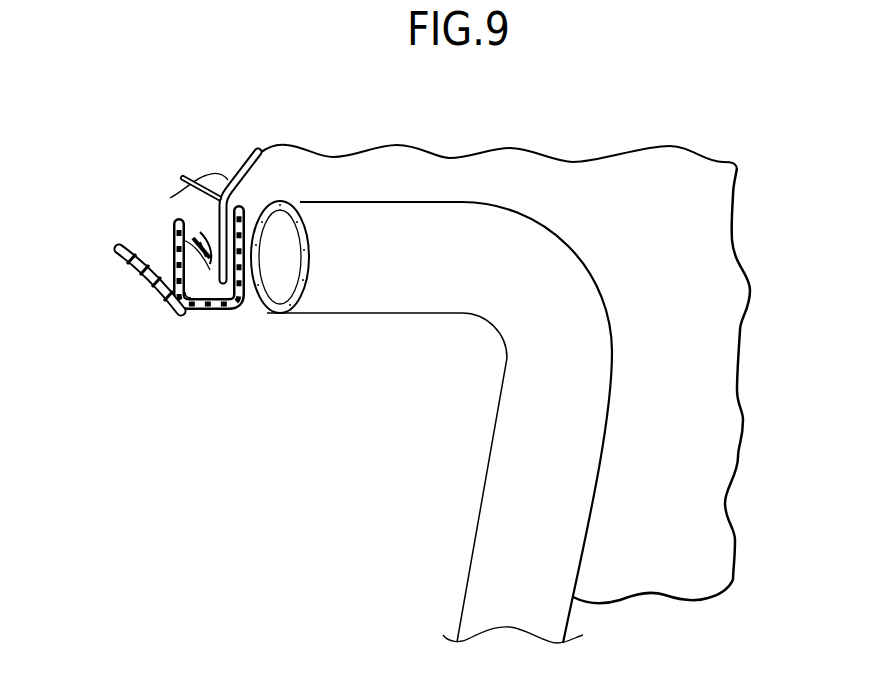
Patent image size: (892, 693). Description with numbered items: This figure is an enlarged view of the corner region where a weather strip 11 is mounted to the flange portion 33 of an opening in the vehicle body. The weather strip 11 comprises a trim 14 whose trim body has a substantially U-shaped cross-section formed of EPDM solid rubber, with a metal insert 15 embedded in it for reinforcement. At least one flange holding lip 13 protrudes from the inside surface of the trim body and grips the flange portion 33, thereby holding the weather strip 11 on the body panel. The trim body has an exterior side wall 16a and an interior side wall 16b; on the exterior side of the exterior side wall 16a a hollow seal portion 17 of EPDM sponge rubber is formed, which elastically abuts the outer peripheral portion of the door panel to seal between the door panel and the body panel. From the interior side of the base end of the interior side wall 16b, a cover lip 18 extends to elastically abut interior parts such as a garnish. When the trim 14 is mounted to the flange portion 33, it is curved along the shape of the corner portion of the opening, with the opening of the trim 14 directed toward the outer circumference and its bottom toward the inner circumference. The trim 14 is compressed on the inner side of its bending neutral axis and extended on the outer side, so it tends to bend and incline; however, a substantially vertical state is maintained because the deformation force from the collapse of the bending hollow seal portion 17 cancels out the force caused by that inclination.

The weather strip 11 is at (470, 368).
The flange holding lip 13 is at (203, 215).
The trim 14 is at (206, 313).
The insert 15 is at (177, 302).
The exterior side wall 16a is at (245, 211).
The interior side wall 16b is at (174, 224).
The hollow seal portion 17 is at (307, 268).
The cover lip 18 is at (119, 258).
The flange portion 33 is at (355, 168).